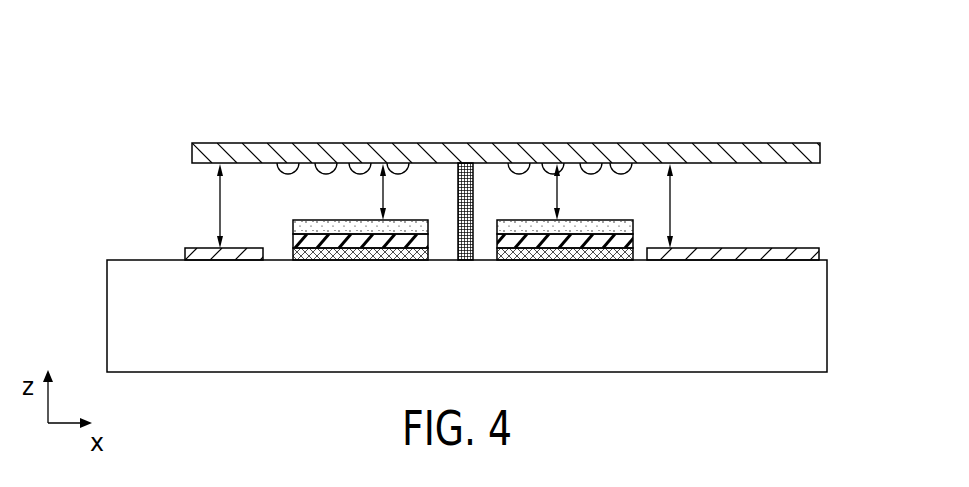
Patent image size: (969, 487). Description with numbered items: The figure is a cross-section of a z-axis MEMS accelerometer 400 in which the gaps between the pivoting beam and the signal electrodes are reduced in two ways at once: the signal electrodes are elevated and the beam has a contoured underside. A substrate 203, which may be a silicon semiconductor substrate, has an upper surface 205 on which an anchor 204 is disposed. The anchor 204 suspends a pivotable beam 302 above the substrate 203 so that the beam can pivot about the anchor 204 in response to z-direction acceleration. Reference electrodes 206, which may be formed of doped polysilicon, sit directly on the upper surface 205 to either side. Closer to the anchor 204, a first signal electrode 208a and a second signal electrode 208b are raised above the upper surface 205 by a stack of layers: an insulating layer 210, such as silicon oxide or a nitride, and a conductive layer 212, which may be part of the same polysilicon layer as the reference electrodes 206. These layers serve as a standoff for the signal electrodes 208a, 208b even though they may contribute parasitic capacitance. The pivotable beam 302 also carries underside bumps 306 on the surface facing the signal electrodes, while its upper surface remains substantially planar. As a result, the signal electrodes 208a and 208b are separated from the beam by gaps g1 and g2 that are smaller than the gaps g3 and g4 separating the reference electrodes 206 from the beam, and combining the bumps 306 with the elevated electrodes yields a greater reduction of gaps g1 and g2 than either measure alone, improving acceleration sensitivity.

The z-axis MEMS accelerometer 400 is at (664, 89).
The substrate 203 is at (467, 316).
The upper surface 205 is at (118, 254).
The reference electrodes 206 is at (187, 254).
The pivotable beam 302 is at (193, 148).
The underside bumps 306 is at (289, 168).
The anchor 204 is at (467, 165).
The first signal electrode 208a is at (352, 227).
The second signal electrode 208b is at (517, 227).
The conductive layer 212 is at (293, 237).
The insulating layer 210 is at (338, 237).
The gap g1 is at (397, 192).
The gap g2 is at (572, 192).
The gap g3 is at (232, 206).
The gap g4 is at (685, 206).